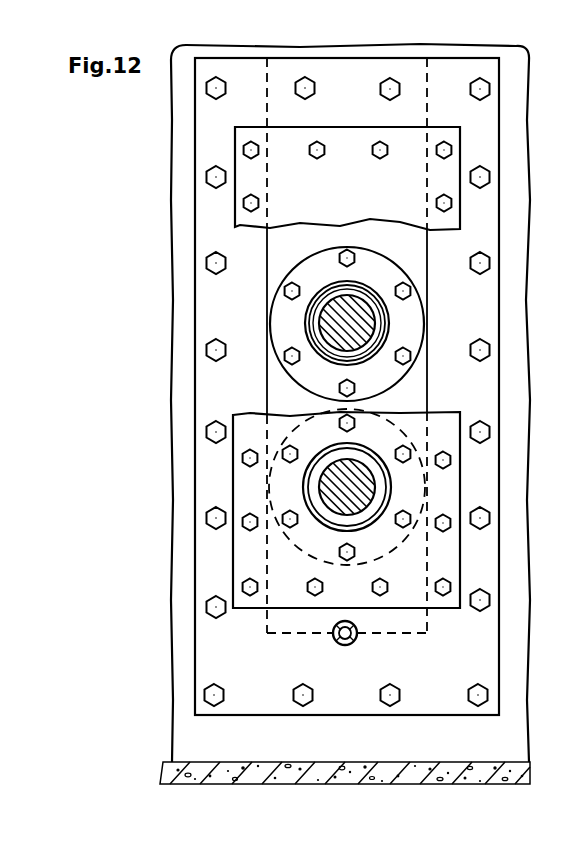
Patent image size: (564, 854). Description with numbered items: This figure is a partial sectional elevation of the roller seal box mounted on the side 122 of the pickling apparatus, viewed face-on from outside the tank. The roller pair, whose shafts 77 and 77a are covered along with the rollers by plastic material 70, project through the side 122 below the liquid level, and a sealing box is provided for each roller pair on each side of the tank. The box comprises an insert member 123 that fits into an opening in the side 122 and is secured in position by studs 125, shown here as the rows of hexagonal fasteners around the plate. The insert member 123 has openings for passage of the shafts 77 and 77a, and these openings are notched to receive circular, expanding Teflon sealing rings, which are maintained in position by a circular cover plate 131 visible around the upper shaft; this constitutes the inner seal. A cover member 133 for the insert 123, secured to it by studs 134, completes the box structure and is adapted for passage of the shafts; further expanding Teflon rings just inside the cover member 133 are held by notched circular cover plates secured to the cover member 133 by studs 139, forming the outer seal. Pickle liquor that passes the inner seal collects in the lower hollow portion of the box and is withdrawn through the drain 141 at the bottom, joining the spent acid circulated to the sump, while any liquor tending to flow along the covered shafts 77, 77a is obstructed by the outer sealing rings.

The side of the pickling apparatus 122 is at (523, 245).
The insert member 123 is at (489, 152).
The studs 125 is at (470, 90).
The circular cover plate 131 is at (364, 257).
The cover member 133 is at (364, 113).
The studs 134 is at (440, 585).
The studs 139 is at (407, 527).
The drain 141 is at (353, 641).
The plastic material 70 is at (353, 299).
The roller shaft 77 is at (375, 330).
The roller shaft 77a is at (340, 507).